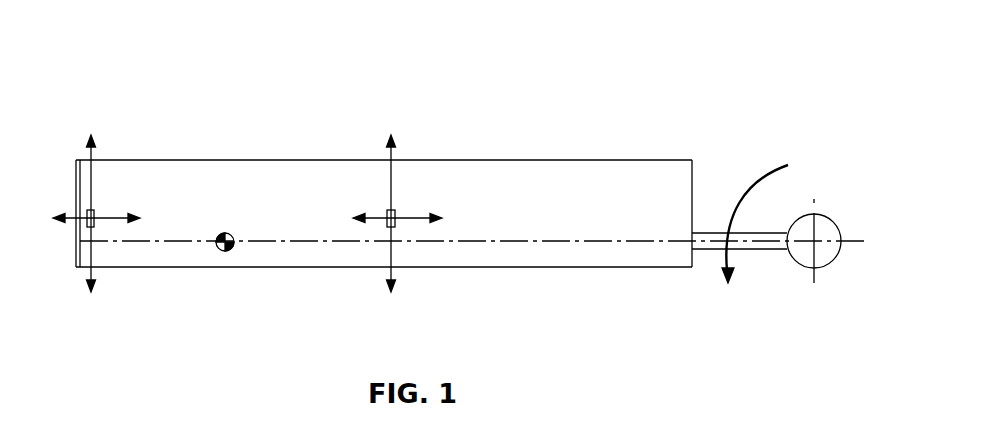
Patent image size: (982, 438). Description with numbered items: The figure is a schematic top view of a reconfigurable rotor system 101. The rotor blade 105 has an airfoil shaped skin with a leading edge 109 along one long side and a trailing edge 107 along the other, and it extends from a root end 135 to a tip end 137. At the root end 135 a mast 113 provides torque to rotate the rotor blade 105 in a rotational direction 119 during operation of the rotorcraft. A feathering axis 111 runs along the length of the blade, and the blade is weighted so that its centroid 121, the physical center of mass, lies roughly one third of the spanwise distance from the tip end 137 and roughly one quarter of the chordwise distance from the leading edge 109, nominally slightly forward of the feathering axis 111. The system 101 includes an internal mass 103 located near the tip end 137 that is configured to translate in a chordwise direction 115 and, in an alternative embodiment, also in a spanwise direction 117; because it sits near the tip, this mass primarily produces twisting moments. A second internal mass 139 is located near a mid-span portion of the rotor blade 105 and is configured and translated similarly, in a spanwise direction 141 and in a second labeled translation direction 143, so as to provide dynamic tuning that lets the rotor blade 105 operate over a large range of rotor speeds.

The reconfigurable rotor system 101 is at (298, 61).
The internal mass 103 is at (96, 228).
The rotor blade 105 is at (613, 160).
The trailing edge 107 is at (541, 158).
The leading edge 109 is at (578, 270).
The feathering axis 111 is at (328, 242).
The mast 113 is at (808, 268).
The chordwise direction 115 is at (92, 174).
The spanwise direction 117 is at (115, 216).
The rotational direction 119 is at (772, 170).
The centroid 121 is at (230, 249).
The root end 135 is at (697, 177).
The tip end 137 is at (73, 254).
The internal mass 139 is at (396, 228).
The spanwise direction 141 is at (393, 176).
The horizontal adjustment direction 143 is at (416, 217).